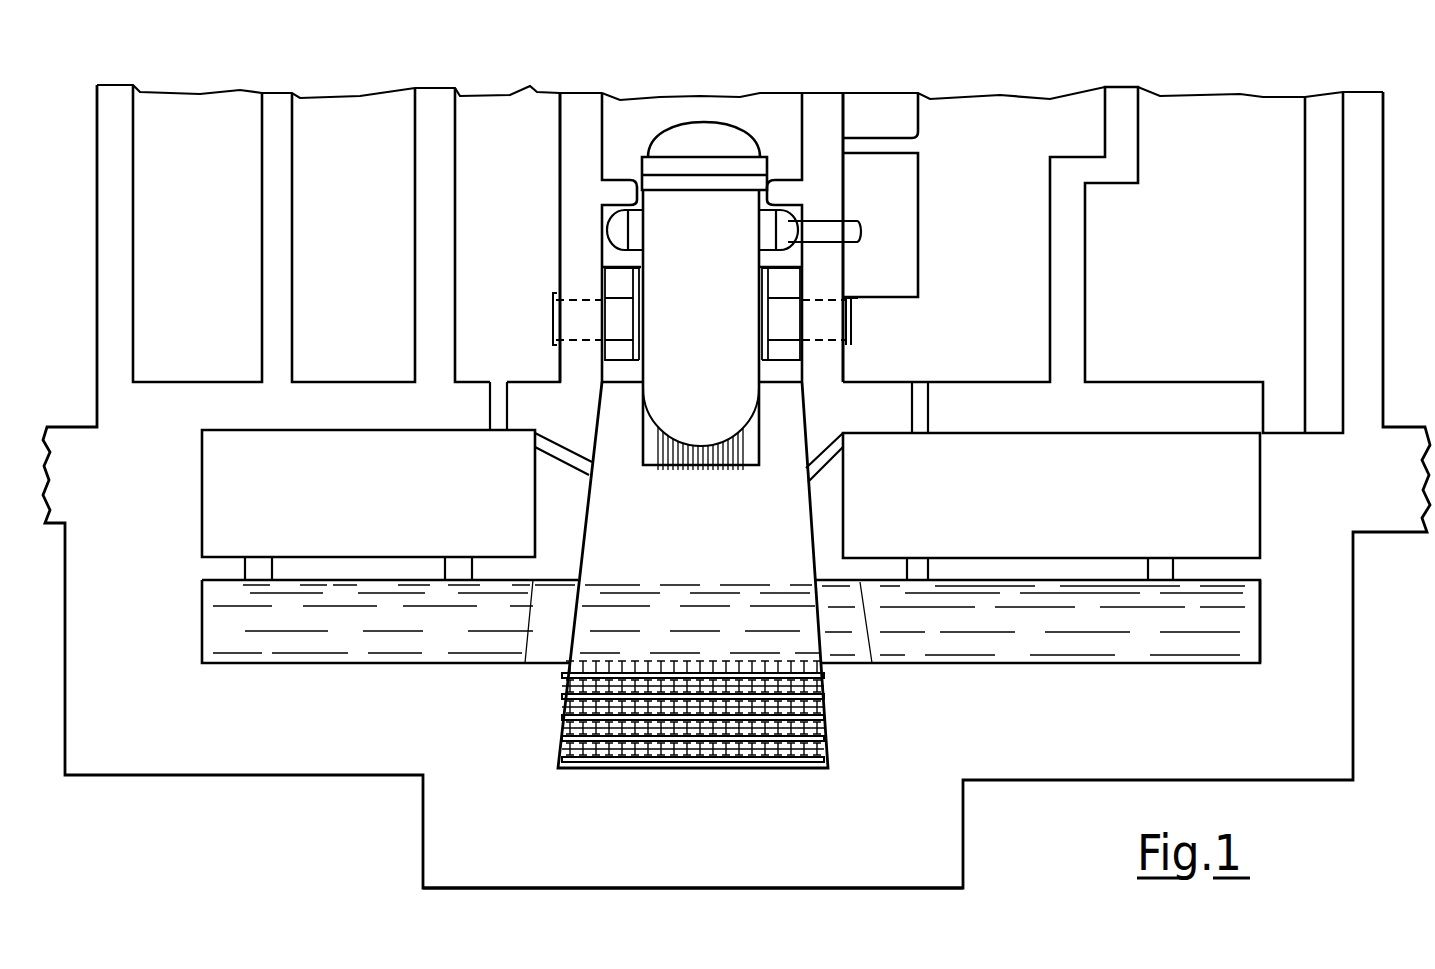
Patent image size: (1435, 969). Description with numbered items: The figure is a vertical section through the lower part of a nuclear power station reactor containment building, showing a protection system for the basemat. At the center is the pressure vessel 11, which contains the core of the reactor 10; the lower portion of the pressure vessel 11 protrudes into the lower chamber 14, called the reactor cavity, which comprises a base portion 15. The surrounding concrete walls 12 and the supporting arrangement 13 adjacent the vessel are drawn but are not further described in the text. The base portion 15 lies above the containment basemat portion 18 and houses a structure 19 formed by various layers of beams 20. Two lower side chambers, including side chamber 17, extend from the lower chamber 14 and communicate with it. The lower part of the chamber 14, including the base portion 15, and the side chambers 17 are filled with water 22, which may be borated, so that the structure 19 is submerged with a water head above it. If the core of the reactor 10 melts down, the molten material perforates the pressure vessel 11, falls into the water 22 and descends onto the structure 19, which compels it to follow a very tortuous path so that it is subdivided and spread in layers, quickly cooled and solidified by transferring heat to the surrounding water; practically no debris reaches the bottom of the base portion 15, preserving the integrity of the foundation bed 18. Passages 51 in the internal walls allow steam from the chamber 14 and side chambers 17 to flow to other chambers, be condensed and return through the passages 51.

The core of the reactor 10 is at (749, 115).
The pressure vessel 11 is at (678, 134).
The concrete shielding wall 12 is at (798, 120).
The vessel support structure 13 is at (790, 283).
The lower chamber 14 is at (793, 421).
The base portion 15 is at (746, 652).
The lower side chamber 17 is at (226, 582).
The containment basemat portion 18 is at (937, 858).
The structure 19 is at (748, 629).
The beams 20 is at (672, 661).
The water 22 is at (1243, 643).
The passages 51 is at (497, 398).